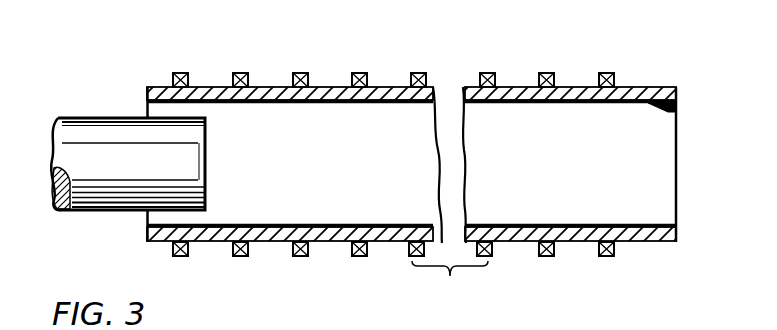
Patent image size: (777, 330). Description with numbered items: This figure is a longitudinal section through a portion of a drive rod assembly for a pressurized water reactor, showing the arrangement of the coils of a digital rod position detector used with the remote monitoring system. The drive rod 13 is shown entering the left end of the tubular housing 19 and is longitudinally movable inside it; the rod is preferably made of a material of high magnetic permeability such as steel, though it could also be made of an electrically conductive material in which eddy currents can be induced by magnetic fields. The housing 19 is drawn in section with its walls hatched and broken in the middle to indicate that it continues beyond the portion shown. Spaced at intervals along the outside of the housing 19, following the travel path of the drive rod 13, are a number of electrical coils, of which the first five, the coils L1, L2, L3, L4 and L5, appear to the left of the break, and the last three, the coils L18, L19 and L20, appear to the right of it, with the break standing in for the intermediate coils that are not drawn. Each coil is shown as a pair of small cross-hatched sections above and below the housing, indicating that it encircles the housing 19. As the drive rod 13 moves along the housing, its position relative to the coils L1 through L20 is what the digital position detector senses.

The drive rod 13 is at (111, 134).
The tubular housing 19 is at (678, 110).
The electrical coil L1 is at (181, 73).
The electrical coil L2 is at (241, 73).
The electrical coil L3 is at (301, 73).
The electrical coil L4 is at (360, 73).
The electrical coil L5 is at (419, 73).
The electrical coil L18 is at (488, 73).
The electrical coil L19 is at (547, 73).
The electrical coil L20 is at (607, 73).